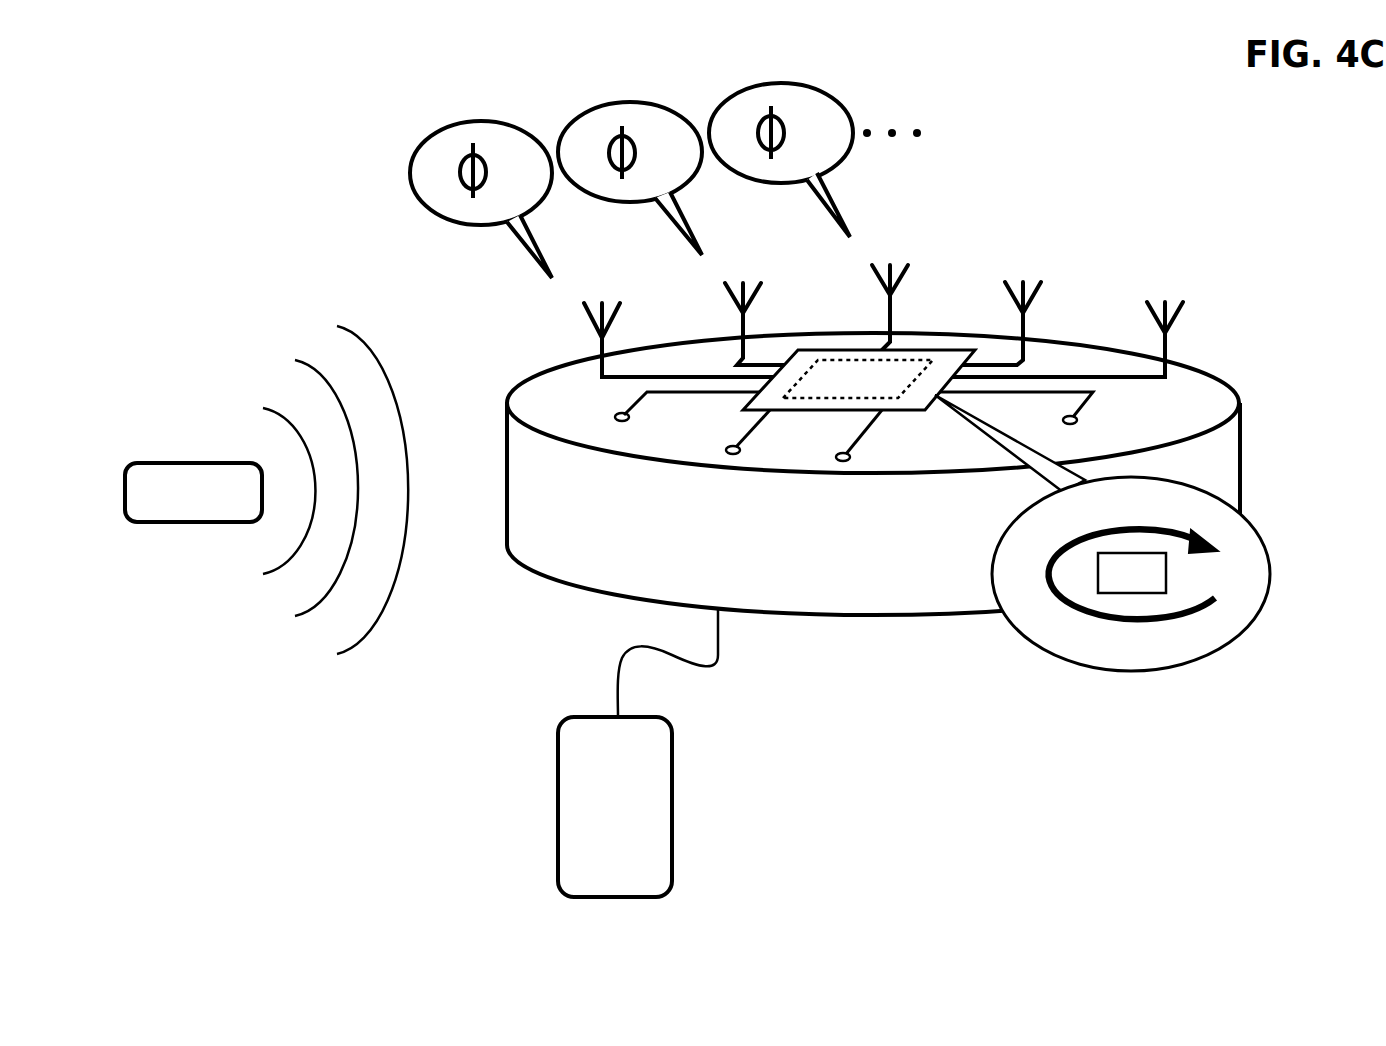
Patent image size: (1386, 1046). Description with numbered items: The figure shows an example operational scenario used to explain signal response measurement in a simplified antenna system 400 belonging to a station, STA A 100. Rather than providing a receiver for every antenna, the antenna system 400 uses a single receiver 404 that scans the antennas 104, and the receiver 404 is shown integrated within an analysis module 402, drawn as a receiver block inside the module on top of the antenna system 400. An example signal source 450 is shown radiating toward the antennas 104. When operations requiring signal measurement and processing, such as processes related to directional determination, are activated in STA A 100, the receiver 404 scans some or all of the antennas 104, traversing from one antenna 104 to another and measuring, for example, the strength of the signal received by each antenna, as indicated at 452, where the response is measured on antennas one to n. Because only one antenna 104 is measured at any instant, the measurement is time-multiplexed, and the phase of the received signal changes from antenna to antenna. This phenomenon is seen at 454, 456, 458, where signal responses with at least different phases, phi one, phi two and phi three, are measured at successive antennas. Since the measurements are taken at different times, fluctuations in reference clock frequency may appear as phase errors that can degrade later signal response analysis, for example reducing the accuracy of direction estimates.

The STA A 100 is at (613, 752).
The antennas 104 is at (866, 342).
The antenna system 400 is at (861, 481).
The analysis module 402 is at (820, 401).
The receiver 404 is at (868, 409).
The signal source 450 is at (266, 490).
The signal response measurement 452 is at (1125, 592).
The signal response with phase phi 1 454 is at (456, 187).
The signal response with phase phi 2 456 is at (606, 160).
The signal response with phase phi 3 458 is at (757, 142).